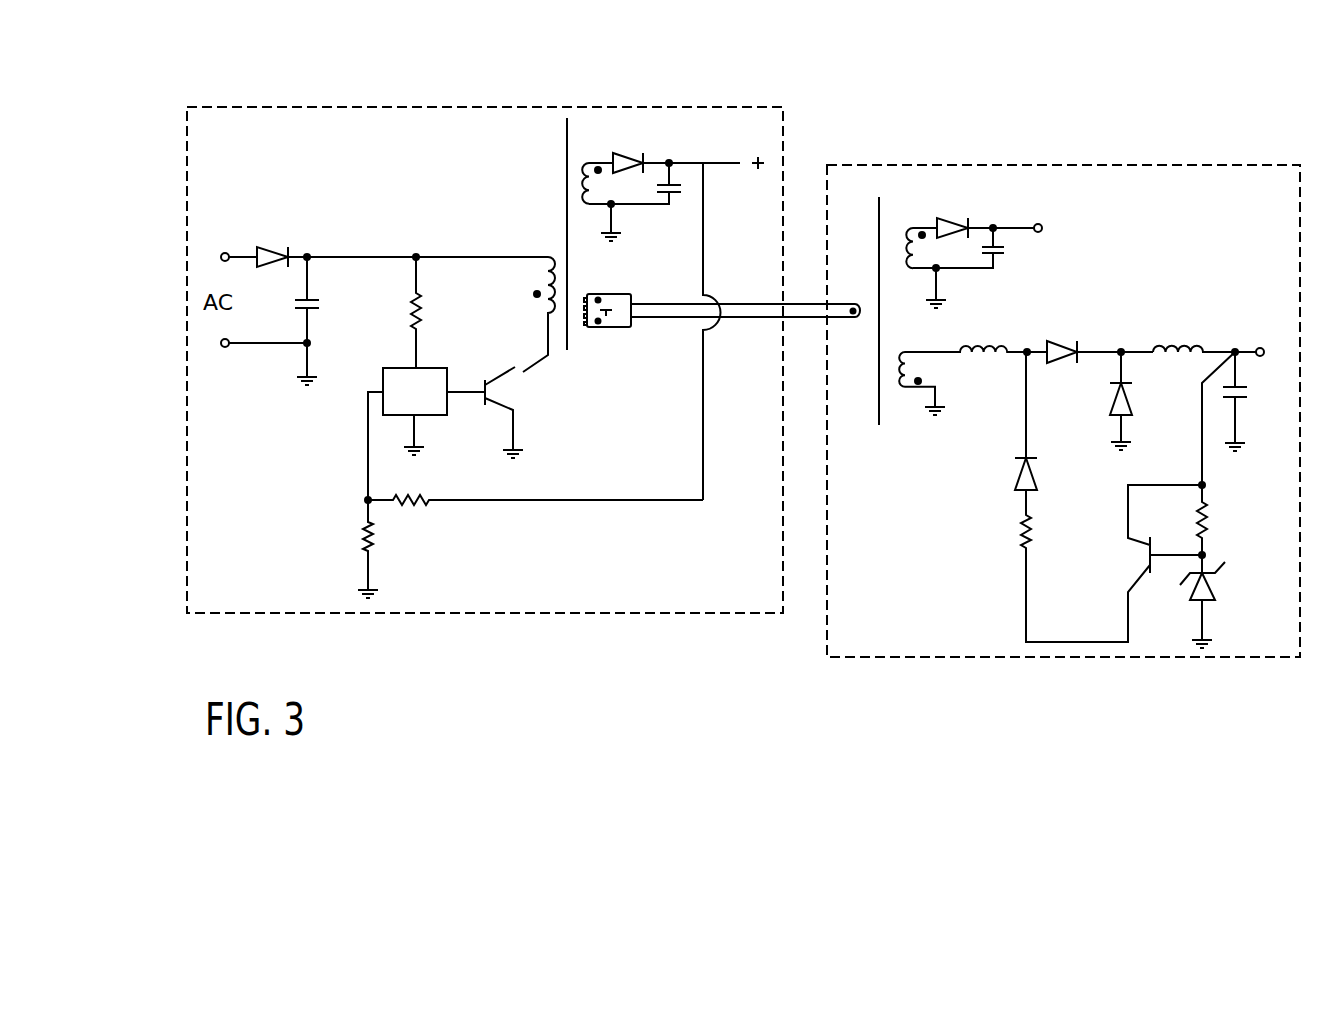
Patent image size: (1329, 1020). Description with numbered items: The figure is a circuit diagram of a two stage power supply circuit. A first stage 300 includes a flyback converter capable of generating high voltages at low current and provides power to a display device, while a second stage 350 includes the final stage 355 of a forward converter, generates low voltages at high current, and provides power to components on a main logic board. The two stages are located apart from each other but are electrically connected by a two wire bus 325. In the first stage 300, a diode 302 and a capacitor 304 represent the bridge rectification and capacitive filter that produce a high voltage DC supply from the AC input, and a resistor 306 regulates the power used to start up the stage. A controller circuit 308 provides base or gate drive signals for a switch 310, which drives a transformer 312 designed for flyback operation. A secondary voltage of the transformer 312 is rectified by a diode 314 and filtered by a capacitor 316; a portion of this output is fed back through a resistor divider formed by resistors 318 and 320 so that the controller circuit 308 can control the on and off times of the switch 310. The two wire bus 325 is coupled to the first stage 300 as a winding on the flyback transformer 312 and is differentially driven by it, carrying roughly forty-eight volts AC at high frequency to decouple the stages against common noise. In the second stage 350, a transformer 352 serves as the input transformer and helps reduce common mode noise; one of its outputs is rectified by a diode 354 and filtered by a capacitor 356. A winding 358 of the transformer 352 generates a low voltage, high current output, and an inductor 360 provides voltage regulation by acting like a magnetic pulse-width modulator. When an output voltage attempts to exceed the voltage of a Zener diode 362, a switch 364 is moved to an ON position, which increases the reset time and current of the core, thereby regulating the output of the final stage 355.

The first stage 300 is at (360, 106).
The diode 302 is at (277, 242).
The capacitor 304 is at (318, 292).
The resistor 306 is at (427, 312).
The controller circuit 308 is at (432, 401).
The switch 310 is at (515, 392).
The transformer 312 is at (550, 171).
The diode 314 is at (633, 142).
The capacitor 316 is at (683, 195).
The resistor 318 is at (420, 512).
The resistor 320 is at (357, 543).
The two wire bus 325 is at (810, 303).
The second stage 350 is at (1158, 165).
The transformer 352 is at (890, 227).
The diode 354 is at (953, 217).
The capacitor 356 is at (1008, 246).
The final stage 355 is at (1130, 323).
The winding 358 is at (942, 373).
The inductor 360 is at (990, 338).
The Zener diode 362 is at (1217, 583).
The switch 364 is at (1137, 563).